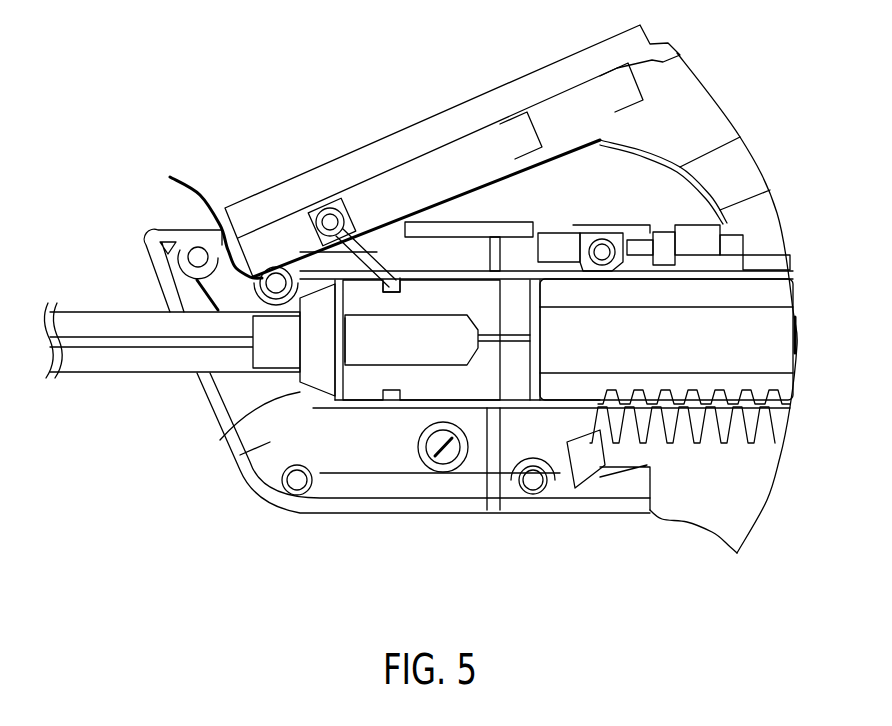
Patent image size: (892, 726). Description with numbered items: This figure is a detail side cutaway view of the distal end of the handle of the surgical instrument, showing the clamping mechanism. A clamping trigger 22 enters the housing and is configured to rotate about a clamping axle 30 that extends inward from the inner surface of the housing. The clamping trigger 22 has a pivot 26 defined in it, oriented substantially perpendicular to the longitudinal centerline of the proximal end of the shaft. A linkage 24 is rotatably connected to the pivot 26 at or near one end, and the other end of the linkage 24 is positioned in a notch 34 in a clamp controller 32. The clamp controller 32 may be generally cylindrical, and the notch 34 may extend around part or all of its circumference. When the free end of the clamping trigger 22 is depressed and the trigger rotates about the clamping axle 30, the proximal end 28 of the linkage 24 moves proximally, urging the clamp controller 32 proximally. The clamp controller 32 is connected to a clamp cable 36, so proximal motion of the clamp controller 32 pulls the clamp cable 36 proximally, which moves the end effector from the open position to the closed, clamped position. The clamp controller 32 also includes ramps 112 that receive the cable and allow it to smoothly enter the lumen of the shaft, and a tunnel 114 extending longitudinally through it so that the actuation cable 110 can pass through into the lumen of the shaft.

The clamping trigger 22 is at (428, 115).
The linkage 24 is at (360, 232).
The pivot 26 is at (303, 218).
The proximal end 28 is at (437, 275).
The clamping axle 30 is at (197, 216).
The clamp controller 32 is at (370, 410).
The notch 34 is at (387, 410).
The clamp cable 36 is at (72, 350).
The actuation cable 110 is at (517, 340).
The ramps 112 is at (295, 378).
The tunnel 114 is at (433, 348).